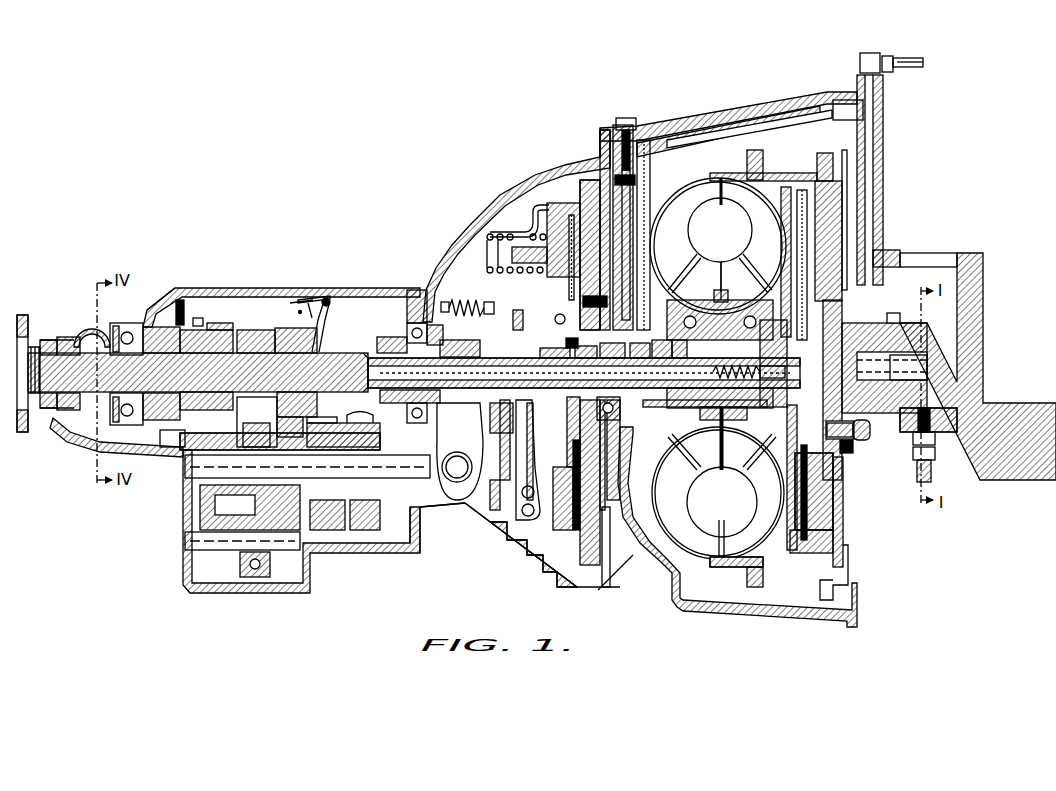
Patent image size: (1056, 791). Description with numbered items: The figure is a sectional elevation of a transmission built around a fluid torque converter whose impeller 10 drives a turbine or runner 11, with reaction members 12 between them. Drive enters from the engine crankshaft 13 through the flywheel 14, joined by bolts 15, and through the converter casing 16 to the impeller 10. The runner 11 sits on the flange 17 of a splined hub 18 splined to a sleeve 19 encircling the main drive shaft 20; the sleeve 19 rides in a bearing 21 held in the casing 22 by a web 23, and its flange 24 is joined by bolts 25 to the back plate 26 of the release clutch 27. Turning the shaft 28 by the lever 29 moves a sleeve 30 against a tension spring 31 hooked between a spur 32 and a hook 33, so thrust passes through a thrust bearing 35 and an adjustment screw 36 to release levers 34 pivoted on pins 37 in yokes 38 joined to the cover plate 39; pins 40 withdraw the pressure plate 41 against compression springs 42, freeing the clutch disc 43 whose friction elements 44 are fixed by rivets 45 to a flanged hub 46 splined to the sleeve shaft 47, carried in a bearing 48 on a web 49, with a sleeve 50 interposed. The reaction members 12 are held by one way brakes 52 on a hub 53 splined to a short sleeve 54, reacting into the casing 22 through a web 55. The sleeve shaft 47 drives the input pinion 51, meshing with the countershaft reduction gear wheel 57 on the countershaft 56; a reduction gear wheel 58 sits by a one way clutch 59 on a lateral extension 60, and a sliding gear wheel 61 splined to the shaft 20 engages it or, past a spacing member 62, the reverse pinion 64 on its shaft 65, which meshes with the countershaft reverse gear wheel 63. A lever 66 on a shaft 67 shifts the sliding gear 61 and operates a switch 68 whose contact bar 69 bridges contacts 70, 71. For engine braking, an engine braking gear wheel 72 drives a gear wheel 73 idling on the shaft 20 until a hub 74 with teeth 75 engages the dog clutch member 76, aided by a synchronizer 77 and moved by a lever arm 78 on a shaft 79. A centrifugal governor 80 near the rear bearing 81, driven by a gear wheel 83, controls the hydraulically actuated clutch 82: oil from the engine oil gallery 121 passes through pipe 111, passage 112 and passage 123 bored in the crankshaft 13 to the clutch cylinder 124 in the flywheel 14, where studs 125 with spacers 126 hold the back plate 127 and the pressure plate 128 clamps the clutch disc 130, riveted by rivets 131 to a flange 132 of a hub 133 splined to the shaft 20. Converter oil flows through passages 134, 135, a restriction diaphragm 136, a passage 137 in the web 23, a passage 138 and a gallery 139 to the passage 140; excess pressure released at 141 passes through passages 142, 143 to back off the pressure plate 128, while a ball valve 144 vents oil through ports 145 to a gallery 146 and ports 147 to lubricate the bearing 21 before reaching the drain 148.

The impeller 10 is at (698, 187).
The turbine or runner 11 is at (760, 214).
The reaction members 12 is at (698, 274).
The engine crankshaft 13 is at (975, 332).
The flywheel 14 is at (833, 166).
The bolts 15 is at (852, 448).
The converter casing 16 is at (762, 180).
The flange 17 is at (782, 286).
The splined hub 18 is at (860, 262).
The sleeve 19 is at (660, 352).
The main drive shaft 20 is at (488, 367).
The bearing 21 is at (590, 350).
The main casing 22 is at (647, 128).
The web 23 is at (598, 186).
The flange 24 is at (560, 353).
The bolts 25 is at (582, 301).
The back plate 26 is at (583, 203).
The release clutch 27 is at (530, 205).
The shaft 28 is at (458, 486).
The lever 29 is at (465, 433).
The sleeve 30 is at (475, 328).
The tension spring 31 is at (448, 301).
The spur 32 is at (465, 300).
The hook 33 is at (432, 278).
The release levers 34 is at (523, 464).
The thrust bearing 35 is at (515, 311).
The adjustment screw 36 is at (480, 438).
The pins 37 is at (521, 512).
The yokes 38 is at (496, 507).
The cover plate 39 is at (512, 464).
The pins 40 is at (522, 515).
The pressure plate 41 is at (566, 526).
The compression springs 42 is at (500, 258).
The clutch disc 43 is at (558, 226).
The friction elements 44 is at (566, 268).
The rivets 45 is at (554, 319).
The flanged hub 46 is at (566, 342).
The sleeve shaft 47 is at (420, 360).
The bearing 48 is at (407, 332).
The web 49 is at (407, 306).
The sleeve 50 is at (476, 352).
The input pinion 51 is at (379, 347).
The one way brakes 52 is at (713, 422).
The hub 53 is at (736, 312).
The short sleeve 54 is at (684, 310).
The web 55 is at (645, 244).
The countershaft 56 is at (194, 473).
The countershaft reduction gear wheel 57 is at (417, 527).
The reduction gear wheel 58 is at (320, 424).
The one way clutch 59 is at (363, 505).
The lateral extension 60 is at (338, 500).
The sliding gear wheel 61 is at (275, 339).
The spacing member 62 is at (292, 505).
The countershaft reverse gear wheel 63 is at (245, 440).
The reverse pinion 64 is at (264, 576).
The shaft 65 is at (190, 546).
The lever 66 is at (325, 326).
The shaft 67 is at (331, 303).
The switch 68 is at (307, 297).
The contact bar 69 is at (314, 298).
The contact 70 is at (299, 313).
The contact 71 is at (300, 305).
The engine braking gear wheel 72 is at (178, 452).
The gear wheel 73 is at (237, 330).
The hub 74 is at (163, 325).
The teeth 75 is at (198, 324).
The dog clutch member 76 is at (200, 328).
The synchronizer 77 is at (205, 442).
The lever arm 78 is at (181, 300).
The shaft 79 is at (182, 293).
The centrifugal speed responsive governor 80 is at (86, 318).
The rear bearing 81 is at (128, 326).
The hydraulically actuated clutch 82 is at (845, 185).
The gear wheel 83 is at (88, 342).
The pipe 111 is at (910, 62).
The passage 112 is at (926, 392).
The engine oil gallery 121 is at (908, 258).
The passage 123 is at (900, 345).
The clutch cylinder 124 is at (832, 333).
The studs 125 is at (823, 540).
The spacers 126 is at (808, 553).
The back plate 127 is at (795, 508).
The pressure plate 128 is at (818, 480).
The clutch disc 130 is at (808, 507).
The rivets 131 is at (782, 474).
The flange 132 is at (774, 462).
The hub 133 is at (762, 445).
The passage 134 is at (870, 130).
The passage 135 is at (697, 124).
The restriction nozzle or diaphragm 136 is at (620, 152).
The passage 137 is at (624, 192).
The passage 138 is at (692, 280).
The gallery 139 is at (684, 350).
The passage 140 is at (729, 306).
The pressure release 141 is at (720, 180).
The passage 142 is at (874, 254).
The passage 143 is at (843, 305).
The ball valve 144 is at (868, 420).
The ports 145 is at (716, 370).
The gallery 146 is at (643, 352).
The ports 147 is at (615, 352).
The drain 148 is at (625, 455).